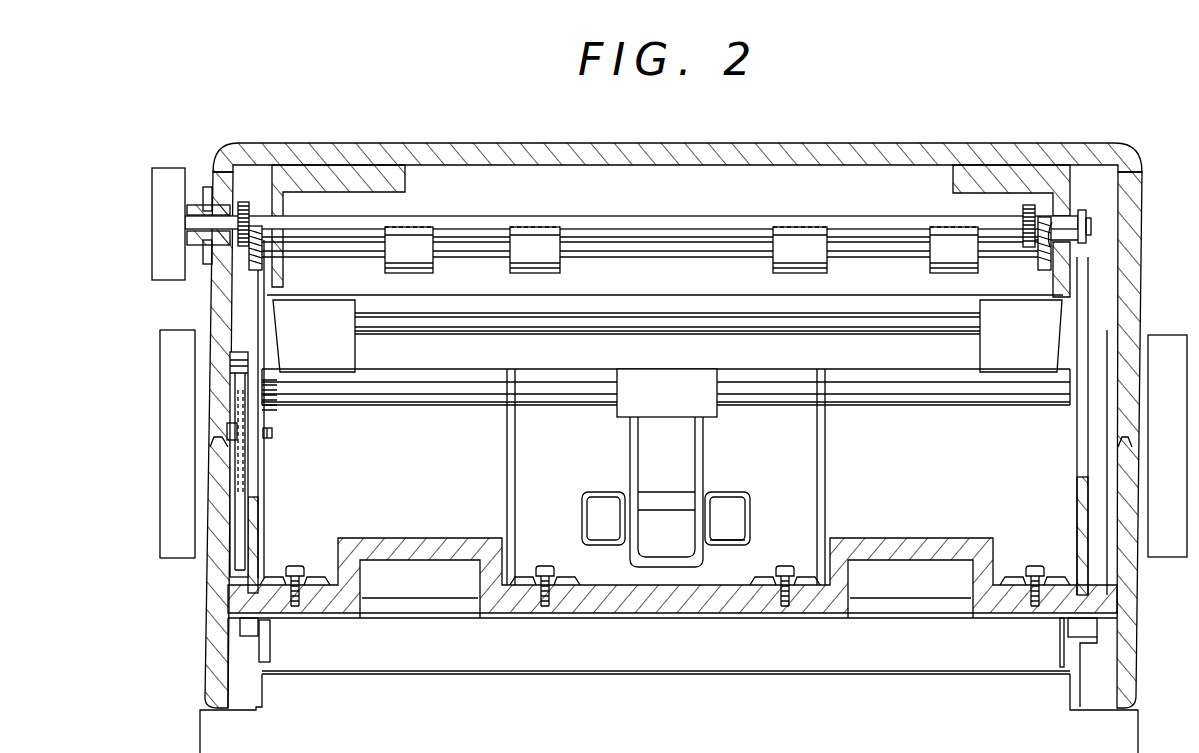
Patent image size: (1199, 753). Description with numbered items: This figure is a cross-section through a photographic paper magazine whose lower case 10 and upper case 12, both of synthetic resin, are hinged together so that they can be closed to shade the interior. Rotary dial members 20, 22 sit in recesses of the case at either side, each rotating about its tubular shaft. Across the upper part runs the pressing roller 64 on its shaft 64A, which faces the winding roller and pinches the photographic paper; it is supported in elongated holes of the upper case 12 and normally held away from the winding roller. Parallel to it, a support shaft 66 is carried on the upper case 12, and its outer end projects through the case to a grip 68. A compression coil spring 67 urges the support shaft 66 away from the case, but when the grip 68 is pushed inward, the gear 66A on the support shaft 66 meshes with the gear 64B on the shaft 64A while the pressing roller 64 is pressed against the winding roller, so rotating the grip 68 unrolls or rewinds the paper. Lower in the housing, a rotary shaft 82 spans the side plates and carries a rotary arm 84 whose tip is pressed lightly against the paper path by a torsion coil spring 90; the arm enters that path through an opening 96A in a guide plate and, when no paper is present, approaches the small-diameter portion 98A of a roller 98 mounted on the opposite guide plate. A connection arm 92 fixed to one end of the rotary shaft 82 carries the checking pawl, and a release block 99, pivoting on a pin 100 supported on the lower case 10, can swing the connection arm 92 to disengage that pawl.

The lower case 10 is at (1140, 592).
The upper case 12 is at (1140, 246).
The rotary dial member 20 is at (167, 327).
The rotary dial member 22 is at (1178, 334).
The pressing roller 64 is at (386, 262).
The shaft 64A is at (472, 253).
The gear 64B is at (255, 262).
The support shaft 66 is at (661, 219).
The gear 66A is at (246, 207).
The compression coil spring 67 is at (1050, 238).
The grip 68 is at (167, 173).
The rotary shaft 82 is at (773, 407).
The rotary arm 84 is at (704, 450).
The torsion coil spring 90 is at (273, 408).
The connection arm 92 is at (244, 554).
The opening 96A is at (740, 549).
The roller 98 is at (728, 505).
The small-diameter portion 98A is at (664, 516).
The release block 99 is at (252, 463).
The pin 100 is at (273, 436).